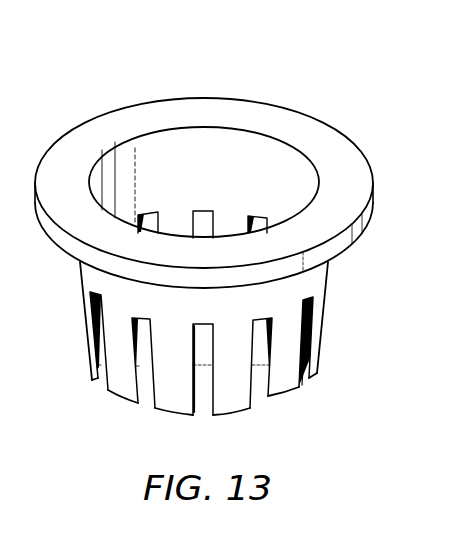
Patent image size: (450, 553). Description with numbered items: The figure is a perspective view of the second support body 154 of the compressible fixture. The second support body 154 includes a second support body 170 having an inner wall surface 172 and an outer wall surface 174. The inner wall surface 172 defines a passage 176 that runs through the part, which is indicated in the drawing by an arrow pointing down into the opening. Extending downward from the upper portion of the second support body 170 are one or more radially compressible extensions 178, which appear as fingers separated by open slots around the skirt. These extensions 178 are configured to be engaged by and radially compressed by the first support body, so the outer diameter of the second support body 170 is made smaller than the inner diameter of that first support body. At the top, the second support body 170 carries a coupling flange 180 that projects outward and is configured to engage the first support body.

The second support body 154 is at (357, 89).
The second support body 170 is at (318, 340).
The inner wall surface 172 is at (230, 141).
The outer wall surface 174 is at (83, 314).
The passage 176 is at (190, 158).
The radially compressible extensions 178 is at (251, 410).
The coupling flange 180 is at (373, 181).